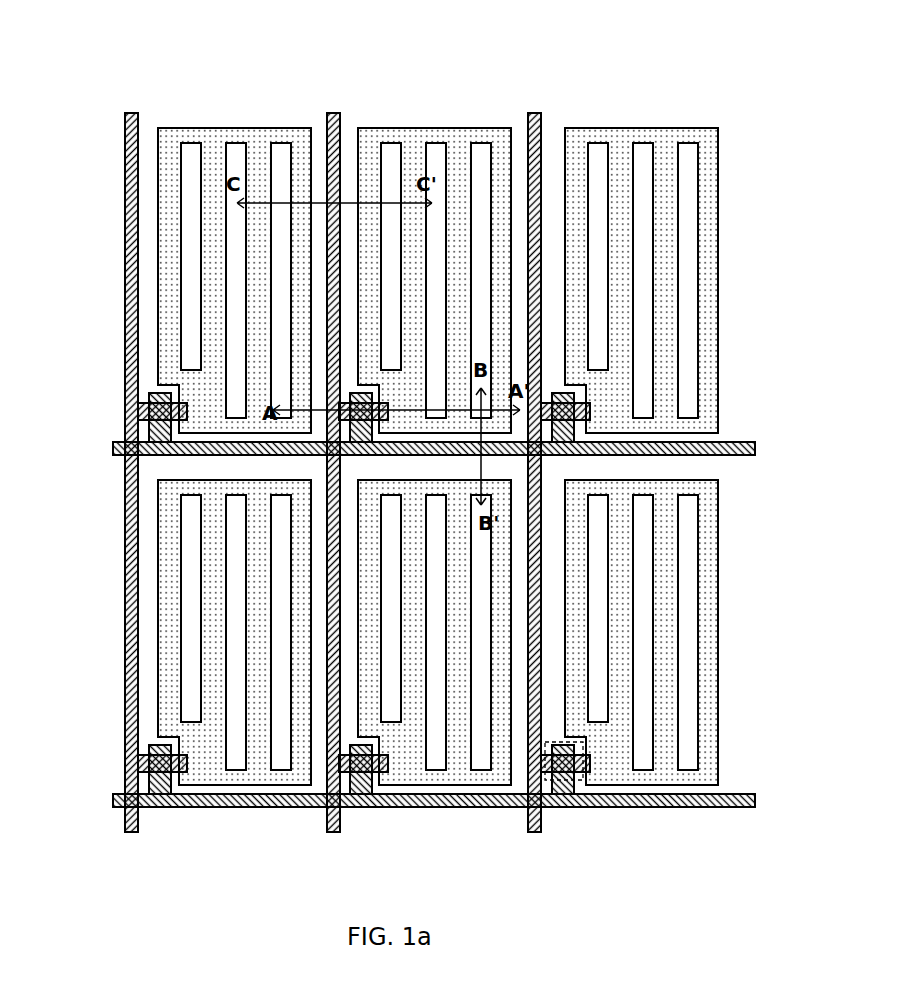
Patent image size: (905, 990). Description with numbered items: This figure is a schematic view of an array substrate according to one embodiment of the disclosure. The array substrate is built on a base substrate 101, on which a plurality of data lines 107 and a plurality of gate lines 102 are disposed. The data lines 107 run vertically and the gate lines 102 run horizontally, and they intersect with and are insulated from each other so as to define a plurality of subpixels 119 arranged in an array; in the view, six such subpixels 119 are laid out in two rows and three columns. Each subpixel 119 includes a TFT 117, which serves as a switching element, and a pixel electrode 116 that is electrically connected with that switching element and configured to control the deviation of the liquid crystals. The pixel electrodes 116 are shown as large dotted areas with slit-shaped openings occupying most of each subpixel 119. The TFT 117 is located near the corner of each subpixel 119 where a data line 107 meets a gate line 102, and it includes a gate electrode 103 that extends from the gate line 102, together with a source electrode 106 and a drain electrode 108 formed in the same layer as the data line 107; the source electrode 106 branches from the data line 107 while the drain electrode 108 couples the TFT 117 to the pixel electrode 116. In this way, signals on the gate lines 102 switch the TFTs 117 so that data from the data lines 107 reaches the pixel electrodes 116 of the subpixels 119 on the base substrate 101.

The base substrate 101 is at (741, 102).
The gate line 102 is at (398, 808).
The gate electrode 103 is at (165, 807).
The source electrode 106 is at (126, 402).
The data line 107 is at (338, 113).
The drain electrode 108 is at (113, 445).
The pixel electrode 116 is at (177, 130).
The TFT 117 is at (583, 778).
The subpixel 119 is at (148, 650).